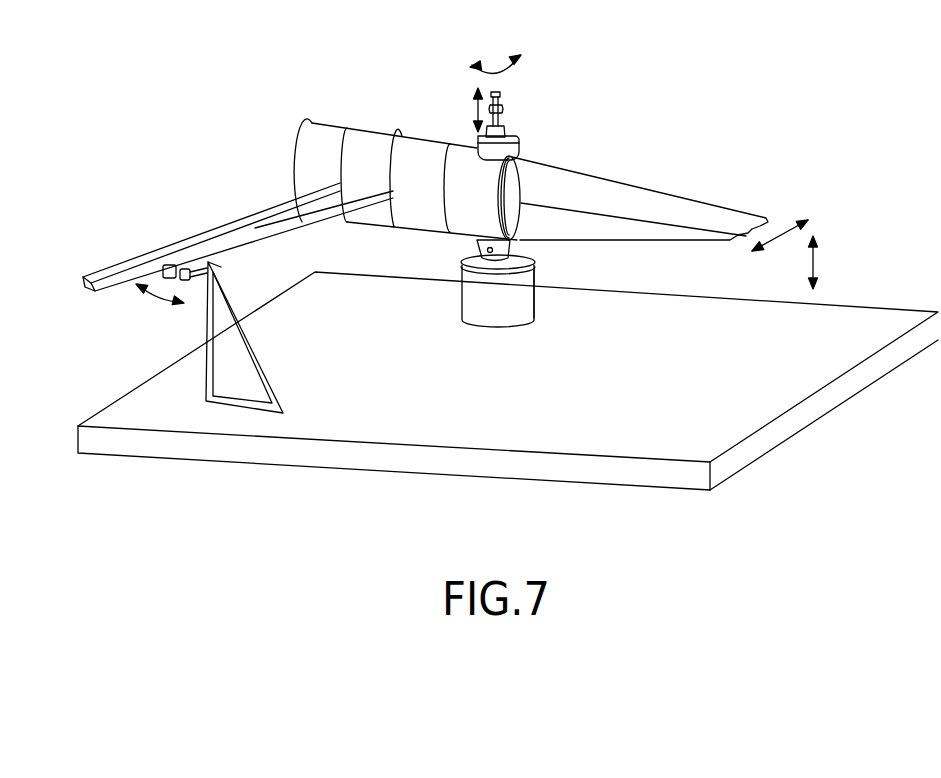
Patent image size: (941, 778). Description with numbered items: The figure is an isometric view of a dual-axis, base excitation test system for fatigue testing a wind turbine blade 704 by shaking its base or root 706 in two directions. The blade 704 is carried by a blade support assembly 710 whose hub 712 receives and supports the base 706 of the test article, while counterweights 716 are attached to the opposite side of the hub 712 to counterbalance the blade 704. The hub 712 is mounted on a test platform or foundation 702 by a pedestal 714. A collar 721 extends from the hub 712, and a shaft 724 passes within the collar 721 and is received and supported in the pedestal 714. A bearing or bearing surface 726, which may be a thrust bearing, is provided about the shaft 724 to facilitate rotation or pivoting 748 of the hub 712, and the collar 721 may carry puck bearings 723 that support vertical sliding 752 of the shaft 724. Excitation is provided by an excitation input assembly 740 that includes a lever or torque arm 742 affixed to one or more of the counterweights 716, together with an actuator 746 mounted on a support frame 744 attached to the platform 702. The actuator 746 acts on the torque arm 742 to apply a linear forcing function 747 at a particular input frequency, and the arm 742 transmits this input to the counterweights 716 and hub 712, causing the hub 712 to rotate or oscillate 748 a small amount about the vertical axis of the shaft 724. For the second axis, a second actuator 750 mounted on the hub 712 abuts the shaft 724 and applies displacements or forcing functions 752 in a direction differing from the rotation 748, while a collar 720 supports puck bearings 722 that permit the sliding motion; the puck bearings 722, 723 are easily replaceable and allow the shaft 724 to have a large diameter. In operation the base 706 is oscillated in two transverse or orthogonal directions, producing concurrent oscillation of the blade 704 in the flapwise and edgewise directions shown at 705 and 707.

The test platform 702 is at (673, 447).
The wind turbine blade 704 is at (751, 192).
The oscillation direction 705 is at (815, 263).
The base 706 is at (551, 172).
The oscillation direction 707 is at (780, 234).
The blade support assembly 710 is at (587, 152).
The hub 712 is at (472, 183).
The pedestal 714 is at (515, 316).
The counterweights 716 is at (378, 140).
The collar 720 is at (519, 143).
The collar 721 is at (527, 260).
The bearings 722 is at (517, 135).
The bearings 723 is at (488, 256).
The shaft 724 is at (462, 258).
The bearing 726 is at (540, 284).
The excitation input assembly 740 is at (210, 298).
The torque arm 742 is at (174, 239).
The support frame 744 is at (243, 323).
The actuator 746 is at (190, 292).
The linear forcing function 747 is at (160, 296).
The rotation 748 is at (498, 72).
The second actuator 750 is at (500, 124).
The displacements 752 is at (478, 112).